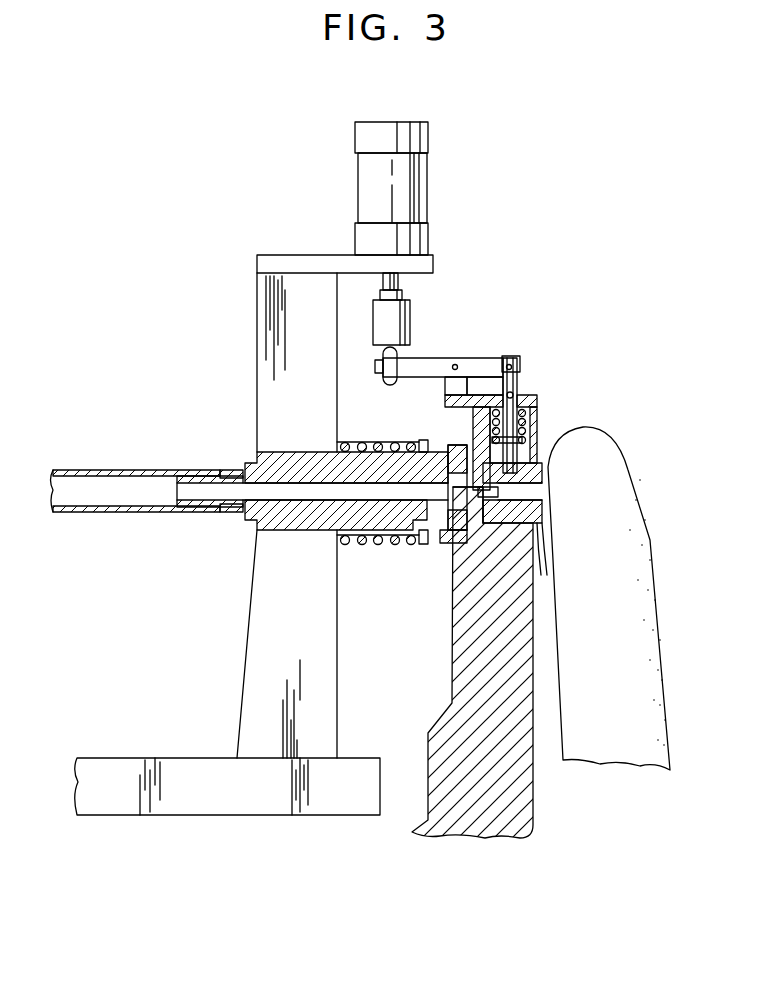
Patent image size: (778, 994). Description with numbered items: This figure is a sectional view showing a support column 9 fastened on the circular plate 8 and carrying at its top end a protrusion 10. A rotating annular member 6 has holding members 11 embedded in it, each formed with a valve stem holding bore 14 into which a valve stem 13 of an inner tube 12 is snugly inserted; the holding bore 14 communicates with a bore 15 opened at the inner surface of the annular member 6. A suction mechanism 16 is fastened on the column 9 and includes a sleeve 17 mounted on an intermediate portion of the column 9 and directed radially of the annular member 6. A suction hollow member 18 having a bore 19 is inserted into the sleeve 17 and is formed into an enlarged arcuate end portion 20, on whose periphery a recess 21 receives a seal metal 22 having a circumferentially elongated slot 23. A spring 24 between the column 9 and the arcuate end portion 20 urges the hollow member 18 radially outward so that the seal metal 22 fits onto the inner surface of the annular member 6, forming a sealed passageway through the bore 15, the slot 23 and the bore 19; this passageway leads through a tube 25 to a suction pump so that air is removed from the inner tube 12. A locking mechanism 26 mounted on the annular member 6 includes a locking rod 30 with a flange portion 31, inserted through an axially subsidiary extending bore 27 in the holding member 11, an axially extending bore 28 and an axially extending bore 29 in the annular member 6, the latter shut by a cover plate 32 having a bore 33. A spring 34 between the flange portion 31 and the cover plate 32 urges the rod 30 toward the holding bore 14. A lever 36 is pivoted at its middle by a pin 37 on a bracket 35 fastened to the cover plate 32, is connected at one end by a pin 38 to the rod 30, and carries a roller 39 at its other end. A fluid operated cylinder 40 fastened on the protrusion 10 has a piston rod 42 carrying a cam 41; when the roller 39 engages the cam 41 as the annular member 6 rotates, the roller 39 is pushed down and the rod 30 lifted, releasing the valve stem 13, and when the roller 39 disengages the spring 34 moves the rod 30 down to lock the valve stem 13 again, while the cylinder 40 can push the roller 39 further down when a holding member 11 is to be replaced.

The annular member 6 is at (533, 800).
The circular plate 8 is at (135, 762).
The support column 9 is at (246, 698).
The protrusion 10 is at (433, 268).
The holding member 11 is at (544, 556).
The inner tube 12 is at (626, 484).
The valve stem 13 is at (542, 514).
The valve stem holding bore 14 is at (542, 492).
The bore 15 is at (470, 540).
The suction mechanism 16 is at (357, 558).
The sleeve 17 is at (280, 463).
The suction hollow member 18 is at (245, 512).
The bore 19 is at (237, 490).
The enlarged arcuate end portion 20 is at (456, 446).
The recess 21 is at (448, 543).
The seal metal 22 is at (400, 445).
The circumferentially elongated slot 23 is at (385, 545).
The spring 24 is at (345, 443).
The tube 25 is at (145, 512).
The locking mechanism 26 is at (548, 347).
The axially subsidiary extending bore 27 is at (480, 520).
The axially extending bore 28 is at (542, 472).
The axially extending bore 29 is at (527, 421).
The locking rod 30 is at (517, 374).
The flange portion 31 is at (524, 441).
The cover plate 32 is at (450, 399).
The bore 33 is at (532, 400).
The spring 34 is at (536, 412).
The bracket 35 is at (447, 386).
The lever 36 is at (422, 360).
The pin 37 is at (458, 365).
The pin 38 is at (512, 356).
The roller 39 is at (385, 382).
The fluid operated cylinder 40 is at (370, 190).
The cam 41 is at (410, 314).
The piston rod 42 is at (400, 280).